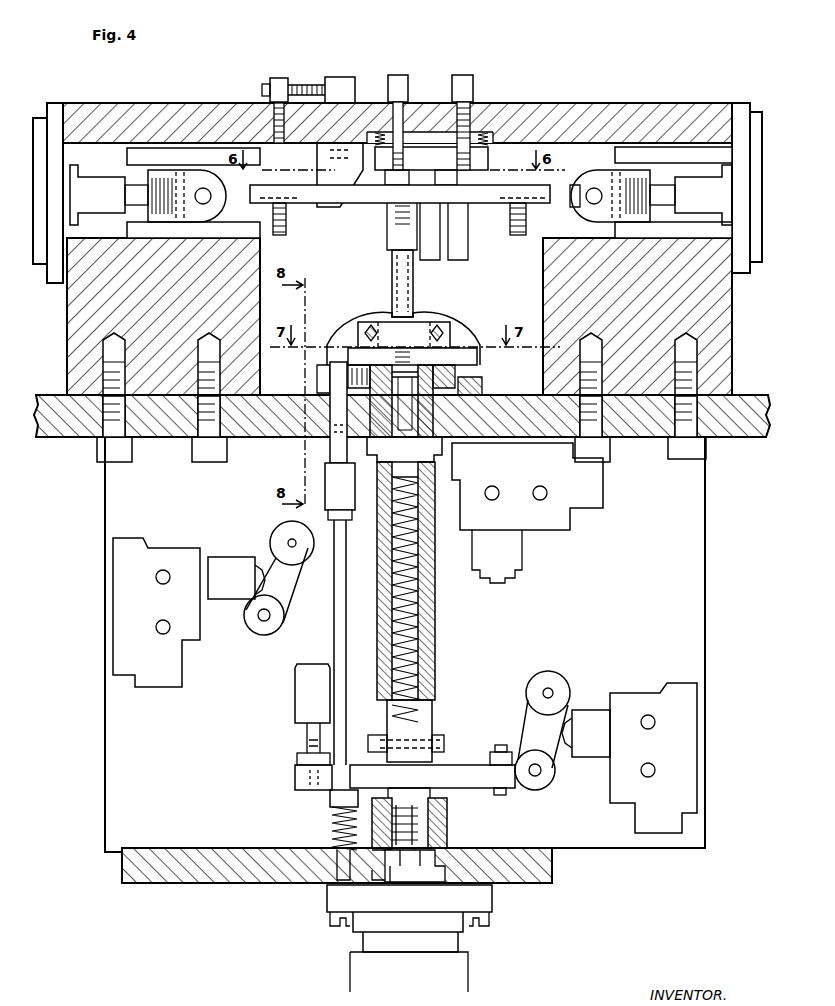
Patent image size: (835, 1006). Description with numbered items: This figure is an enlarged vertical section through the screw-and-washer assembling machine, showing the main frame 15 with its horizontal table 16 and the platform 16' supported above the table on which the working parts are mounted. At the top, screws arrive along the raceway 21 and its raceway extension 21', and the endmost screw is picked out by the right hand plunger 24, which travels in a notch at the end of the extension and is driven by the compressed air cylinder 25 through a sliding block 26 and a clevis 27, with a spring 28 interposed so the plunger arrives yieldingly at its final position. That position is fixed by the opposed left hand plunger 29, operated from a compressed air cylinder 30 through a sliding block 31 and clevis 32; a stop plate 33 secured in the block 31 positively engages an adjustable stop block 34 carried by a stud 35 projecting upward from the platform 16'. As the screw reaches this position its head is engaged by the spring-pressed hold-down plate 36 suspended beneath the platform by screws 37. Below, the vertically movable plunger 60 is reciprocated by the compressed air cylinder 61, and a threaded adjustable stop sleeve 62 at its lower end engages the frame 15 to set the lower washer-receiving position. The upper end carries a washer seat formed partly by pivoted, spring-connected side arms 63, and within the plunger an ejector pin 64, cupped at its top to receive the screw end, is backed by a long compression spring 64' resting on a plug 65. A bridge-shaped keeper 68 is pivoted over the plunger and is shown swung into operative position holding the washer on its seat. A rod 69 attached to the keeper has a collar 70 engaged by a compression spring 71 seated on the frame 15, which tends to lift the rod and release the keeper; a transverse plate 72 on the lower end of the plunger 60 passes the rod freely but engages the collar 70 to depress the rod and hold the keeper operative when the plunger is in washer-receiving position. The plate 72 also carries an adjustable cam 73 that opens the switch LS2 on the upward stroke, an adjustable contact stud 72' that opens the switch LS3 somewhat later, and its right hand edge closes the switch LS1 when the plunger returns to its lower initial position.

The main frame 15 is at (706, 637).
The horizontal table 16 is at (402, 424).
The platform 16' is at (397, 174).
The raceway 21 is at (402, 283).
The raceway extension 21' is at (415, 240).
The right hand plunger 24 is at (476, 205).
The compressed air cylinder 25 is at (722, 220).
The sliding block 26 is at (660, 153).
The clevis 27 is at (580, 213).
The spring 28 is at (590, 170).
The left hand plunger 29 is at (372, 204).
The compressed air cylinder 30 is at (78, 176).
The sliding block 31 is at (138, 159).
The clevis 32 is at (204, 172).
The stop plate 33 is at (262, 208).
The adjustable stop block 34 is at (332, 210).
The stud 35 is at (274, 78).
The hold-down plate 36 is at (432, 148).
The screws 37 is at (470, 83).
The plunger 60 is at (428, 638).
The compressed air cylinder 61 is at (350, 976).
The adjustable stop sleeve 62 is at (446, 832).
The side arms 63 is at (403, 338).
The ejector pin 64 is at (415, 413).
The compression spring 64' is at (430, 588).
The plug 65 is at (418, 725).
The bridge-shaped keeper 68 is at (452, 358).
The rod 69 is at (333, 628).
The collar 70 is at (330, 800).
The compression spring 71 is at (335, 822).
The plate 72 is at (432, 776).
The adjustable contact stud 72' is at (505, 758).
The adjustable cam 73 is at (318, 699).
The switch LS1 is at (606, 752).
The switch LS2 is at (213, 604).
The switch LS3 is at (527, 513).